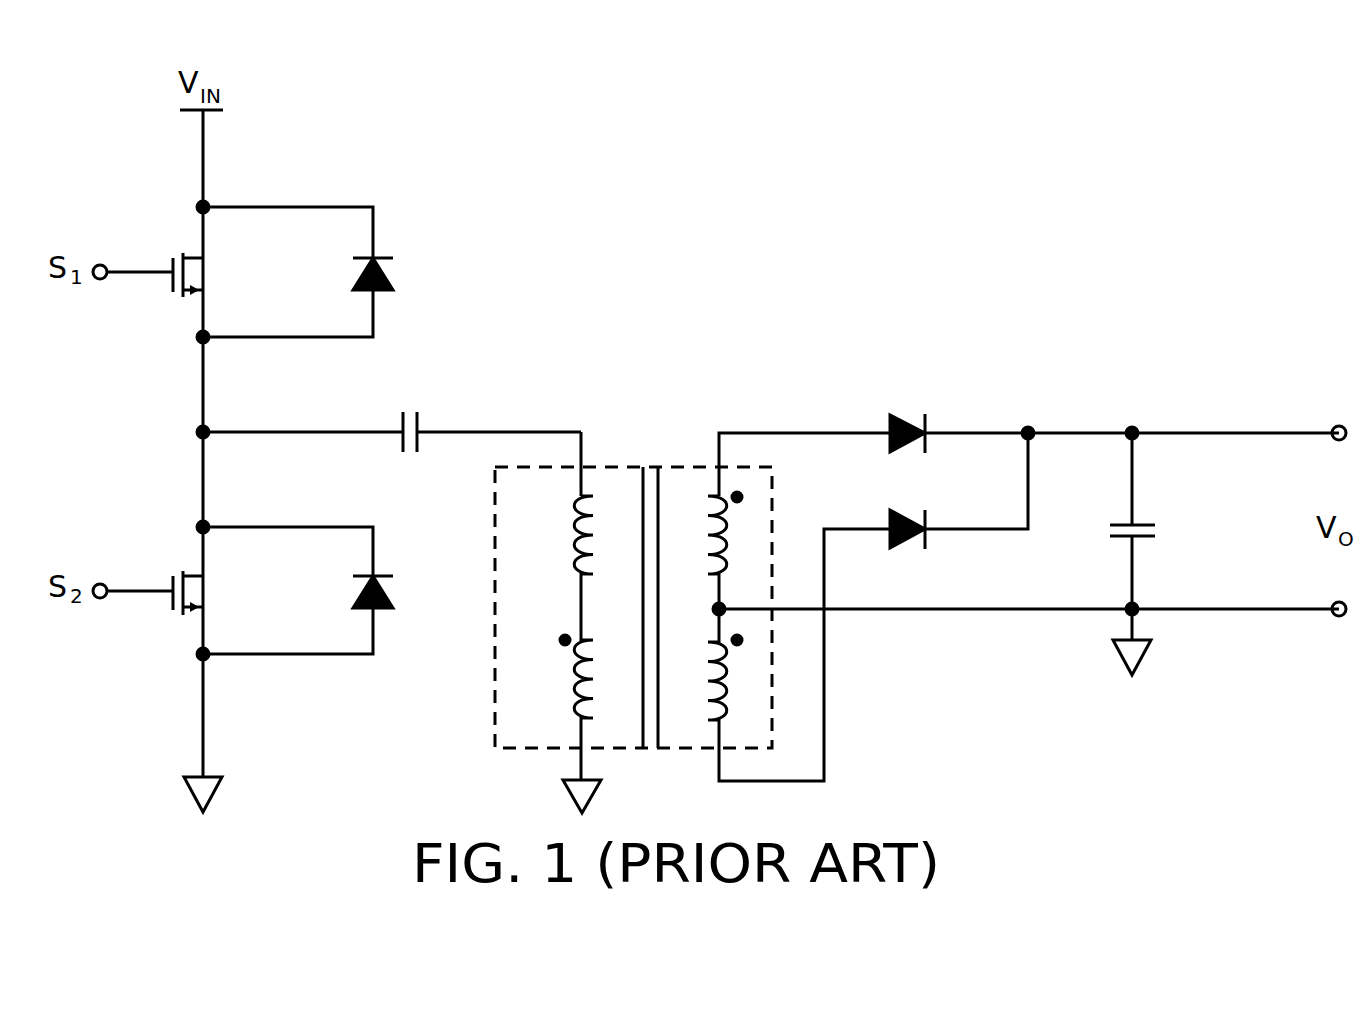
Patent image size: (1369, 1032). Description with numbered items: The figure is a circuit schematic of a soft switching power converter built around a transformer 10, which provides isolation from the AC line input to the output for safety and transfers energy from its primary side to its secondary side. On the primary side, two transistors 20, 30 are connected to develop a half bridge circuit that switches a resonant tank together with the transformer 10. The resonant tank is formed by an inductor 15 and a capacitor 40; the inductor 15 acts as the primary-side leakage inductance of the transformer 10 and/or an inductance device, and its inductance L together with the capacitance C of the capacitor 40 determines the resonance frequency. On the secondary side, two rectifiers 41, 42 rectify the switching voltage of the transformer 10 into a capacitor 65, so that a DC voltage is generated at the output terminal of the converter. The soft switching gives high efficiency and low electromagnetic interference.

The transformer 10 is at (615, 482).
The inductor 15 is at (562, 605).
The transistor 20 is at (205, 278).
The transistor 30 is at (205, 595).
The capacitor 40 is at (407, 408).
The rectifier 41 is at (895, 413).
The rectifier 42 is at (895, 508).
The capacitor 65 is at (1157, 531).